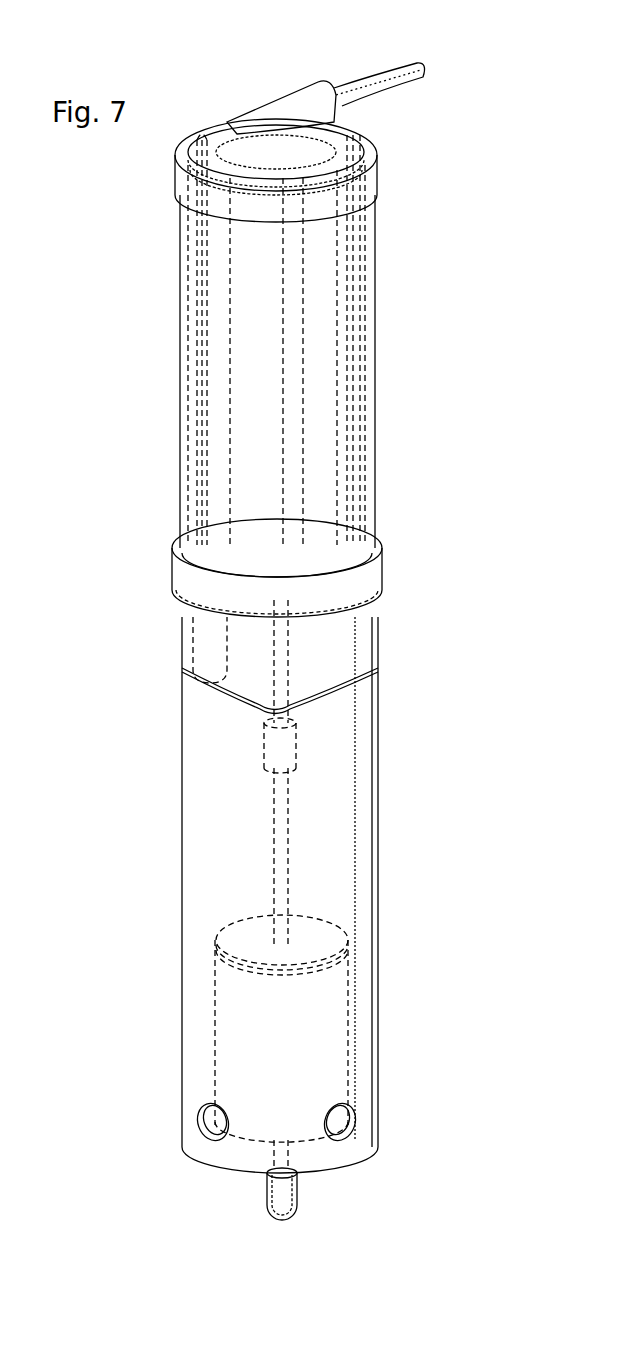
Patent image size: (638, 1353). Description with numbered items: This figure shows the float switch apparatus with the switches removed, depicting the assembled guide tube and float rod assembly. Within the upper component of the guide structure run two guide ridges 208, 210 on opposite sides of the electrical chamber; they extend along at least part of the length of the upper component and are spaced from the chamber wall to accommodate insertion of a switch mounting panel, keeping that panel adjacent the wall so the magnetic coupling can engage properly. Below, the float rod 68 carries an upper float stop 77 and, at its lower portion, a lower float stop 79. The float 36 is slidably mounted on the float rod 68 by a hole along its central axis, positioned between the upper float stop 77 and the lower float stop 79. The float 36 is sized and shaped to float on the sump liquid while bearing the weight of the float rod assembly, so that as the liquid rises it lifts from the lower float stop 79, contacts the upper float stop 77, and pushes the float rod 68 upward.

The guide ridge 210 is at (178, 233).
The guide ridge 208 is at (373, 228).
The upper float stop 77 is at (282, 750).
The float rod 68 is at (290, 843).
The float 36 is at (330, 1017).
The lower float stop 79 is at (285, 1198).